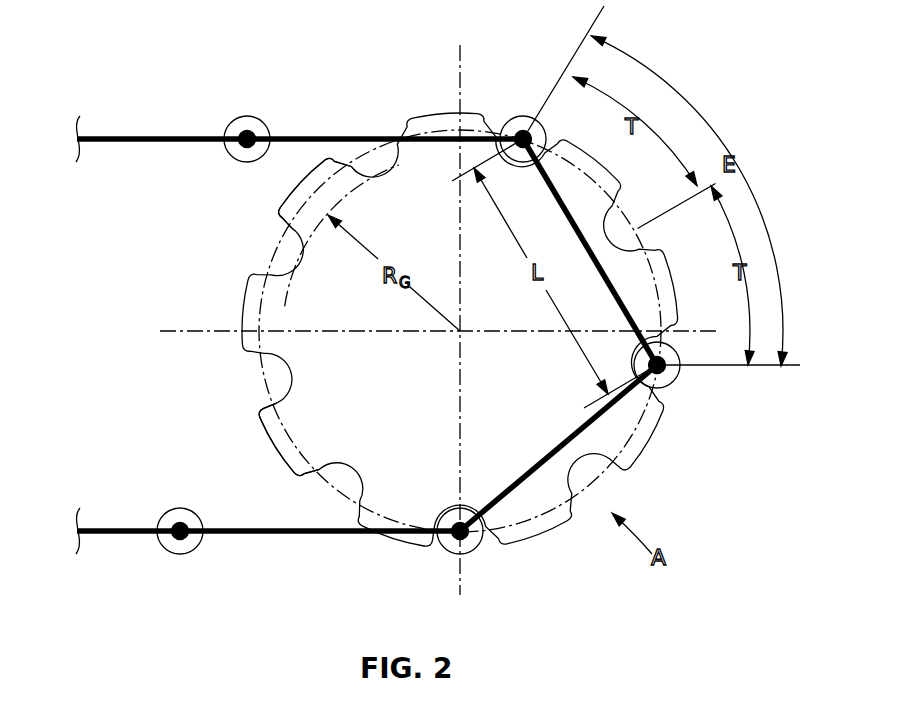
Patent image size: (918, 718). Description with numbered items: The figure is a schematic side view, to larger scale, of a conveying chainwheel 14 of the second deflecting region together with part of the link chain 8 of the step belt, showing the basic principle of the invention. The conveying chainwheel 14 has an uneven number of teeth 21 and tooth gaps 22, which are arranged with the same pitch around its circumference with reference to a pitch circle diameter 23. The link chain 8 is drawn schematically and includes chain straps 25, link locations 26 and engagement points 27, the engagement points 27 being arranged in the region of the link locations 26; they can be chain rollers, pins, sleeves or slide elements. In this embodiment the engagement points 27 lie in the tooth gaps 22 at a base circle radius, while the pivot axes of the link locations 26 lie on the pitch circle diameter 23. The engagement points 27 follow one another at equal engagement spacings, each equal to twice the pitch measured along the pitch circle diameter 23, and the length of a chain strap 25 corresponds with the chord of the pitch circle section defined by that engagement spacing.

The link chain 8 is at (115, 143).
The conveying chainwheel 14 is at (283, 312).
The teeth 21 is at (302, 193).
The tooth gaps 22 is at (262, 249).
The pitch circle diameter 23 is at (285, 440).
The chain straps 25 is at (296, 535).
The link locations 26 is at (158, 545).
The engagement points 27 is at (192, 543).